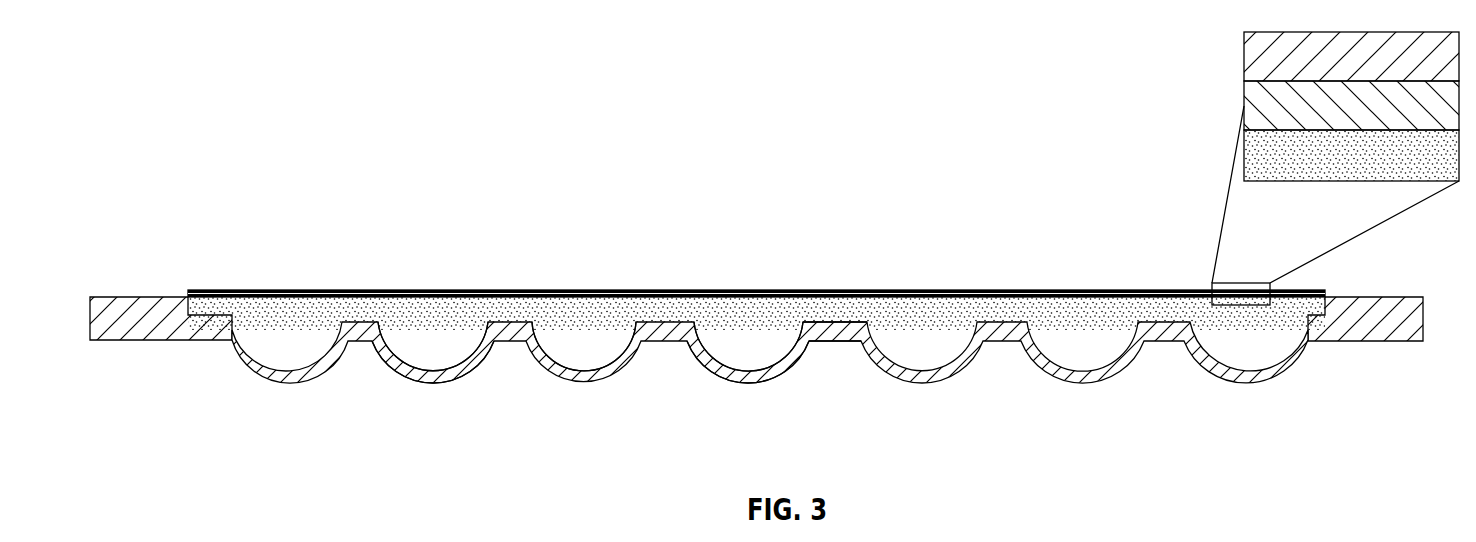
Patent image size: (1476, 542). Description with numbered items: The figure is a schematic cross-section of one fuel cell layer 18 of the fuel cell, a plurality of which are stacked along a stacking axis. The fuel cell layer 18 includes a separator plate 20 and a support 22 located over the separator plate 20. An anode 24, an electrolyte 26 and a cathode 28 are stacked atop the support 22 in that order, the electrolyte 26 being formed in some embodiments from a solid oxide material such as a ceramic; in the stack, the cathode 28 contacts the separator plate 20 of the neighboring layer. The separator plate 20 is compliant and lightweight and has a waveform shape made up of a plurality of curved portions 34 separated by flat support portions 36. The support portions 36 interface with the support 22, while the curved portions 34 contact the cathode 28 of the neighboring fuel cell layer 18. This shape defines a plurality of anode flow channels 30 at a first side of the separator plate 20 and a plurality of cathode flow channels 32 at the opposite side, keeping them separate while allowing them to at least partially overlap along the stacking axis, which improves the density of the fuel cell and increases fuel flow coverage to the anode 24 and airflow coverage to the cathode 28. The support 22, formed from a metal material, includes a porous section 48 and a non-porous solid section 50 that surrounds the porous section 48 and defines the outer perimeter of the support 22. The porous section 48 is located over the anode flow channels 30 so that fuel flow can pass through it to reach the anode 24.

The fuel cell layer 18 is at (268, 80).
The separator plate 20 is at (940, 372).
The support 22 is at (448, 313).
The anode 24 is at (1250, 150).
The electrolyte 26 is at (1250, 100).
The cathode 28 is at (1250, 65).
The anode flow channels 30 is at (442, 356).
The cathode flow channels 32 is at (692, 382).
The curved portions 34 is at (747, 383).
The flat support portions 36 is at (842, 343).
The porous section 48 is at (590, 338).
The solid section 50 is at (132, 308).